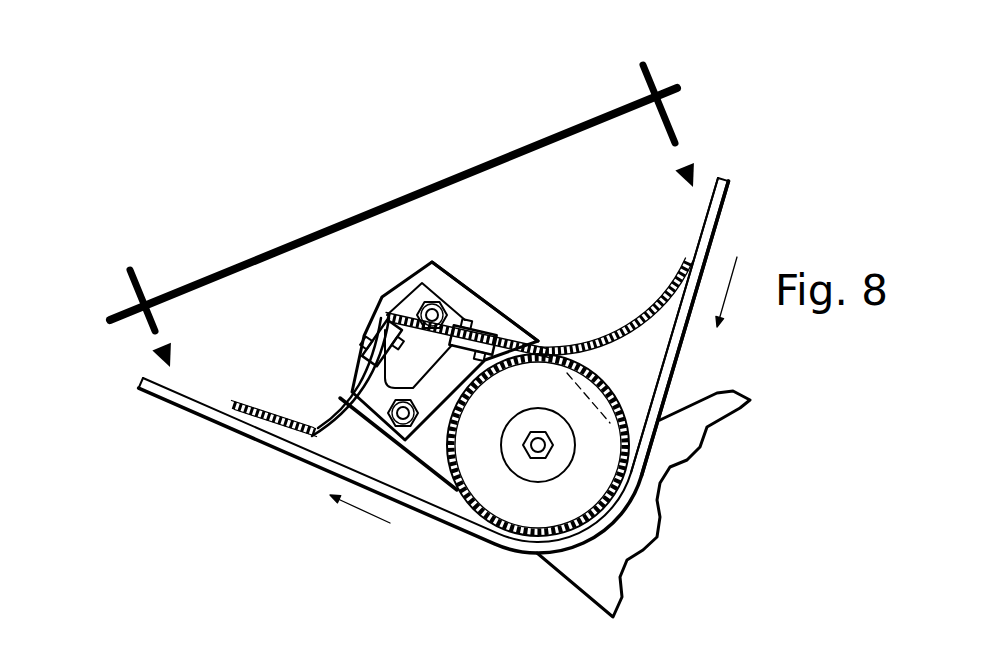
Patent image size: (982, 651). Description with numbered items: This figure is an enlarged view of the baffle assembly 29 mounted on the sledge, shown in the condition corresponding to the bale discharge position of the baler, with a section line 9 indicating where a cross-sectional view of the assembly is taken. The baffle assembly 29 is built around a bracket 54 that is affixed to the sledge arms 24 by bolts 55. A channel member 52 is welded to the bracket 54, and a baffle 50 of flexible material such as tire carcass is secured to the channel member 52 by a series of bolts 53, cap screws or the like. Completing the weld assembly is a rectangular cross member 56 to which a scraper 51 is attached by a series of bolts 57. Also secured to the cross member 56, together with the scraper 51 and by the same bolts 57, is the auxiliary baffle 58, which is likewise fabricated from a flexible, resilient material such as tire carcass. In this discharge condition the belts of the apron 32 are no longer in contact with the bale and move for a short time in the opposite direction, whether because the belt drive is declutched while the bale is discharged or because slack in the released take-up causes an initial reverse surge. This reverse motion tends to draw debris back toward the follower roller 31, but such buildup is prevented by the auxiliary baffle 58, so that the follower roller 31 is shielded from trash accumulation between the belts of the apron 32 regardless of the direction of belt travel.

The section line 9- 9 is at (404, 195).
The sledge arms 24 is at (597, 572).
The baffle assembly 29 is at (325, 180).
The follower roller 31 is at (620, 397).
The apron 32 is at (717, 222).
The baffle 50 is at (317, 420).
The scraper 51 is at (517, 338).
The channel member 52 is at (362, 405).
The bolts 53 is at (360, 337).
The bracket 54 is at (415, 275).
The bolts 55 is at (447, 335).
The rectangular cross member 56 is at (400, 313).
The bolts 57 is at (500, 335).
The auxiliary baffle 58 is at (647, 252).